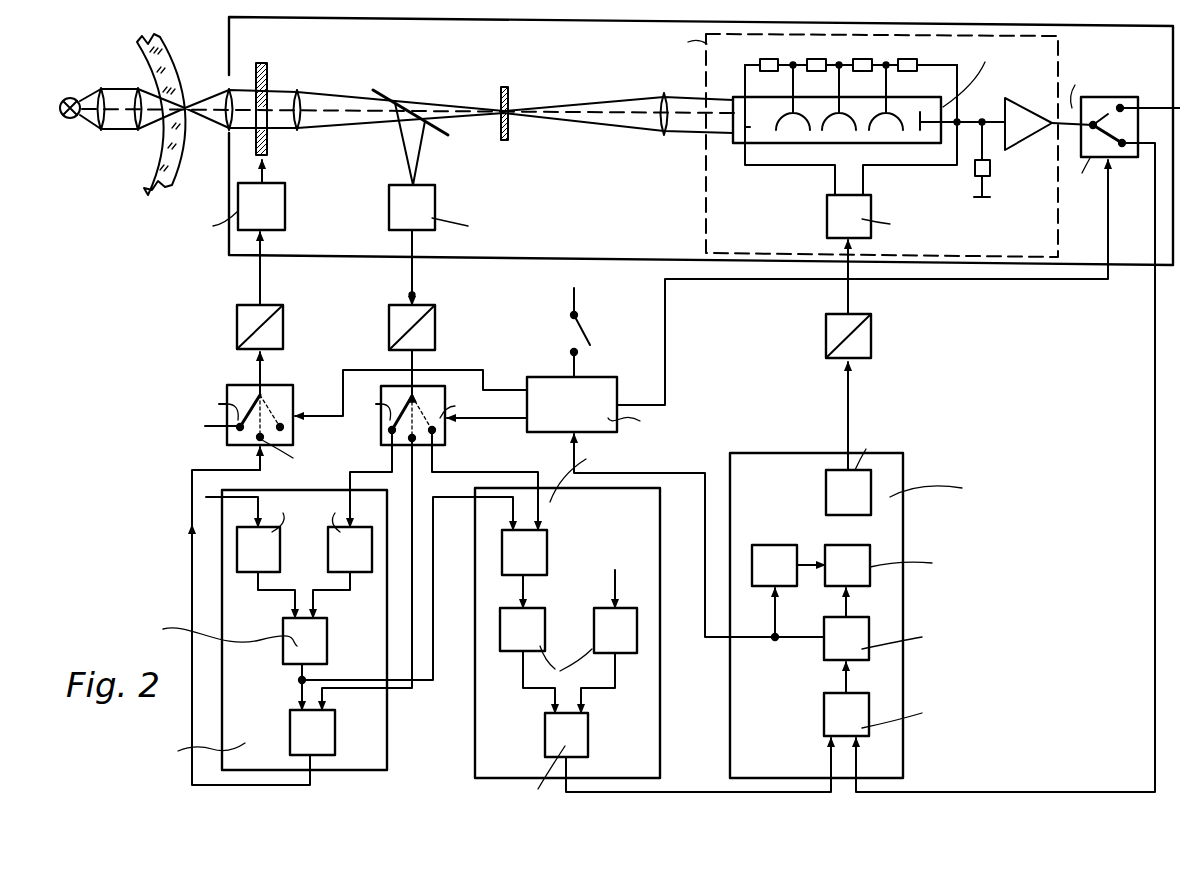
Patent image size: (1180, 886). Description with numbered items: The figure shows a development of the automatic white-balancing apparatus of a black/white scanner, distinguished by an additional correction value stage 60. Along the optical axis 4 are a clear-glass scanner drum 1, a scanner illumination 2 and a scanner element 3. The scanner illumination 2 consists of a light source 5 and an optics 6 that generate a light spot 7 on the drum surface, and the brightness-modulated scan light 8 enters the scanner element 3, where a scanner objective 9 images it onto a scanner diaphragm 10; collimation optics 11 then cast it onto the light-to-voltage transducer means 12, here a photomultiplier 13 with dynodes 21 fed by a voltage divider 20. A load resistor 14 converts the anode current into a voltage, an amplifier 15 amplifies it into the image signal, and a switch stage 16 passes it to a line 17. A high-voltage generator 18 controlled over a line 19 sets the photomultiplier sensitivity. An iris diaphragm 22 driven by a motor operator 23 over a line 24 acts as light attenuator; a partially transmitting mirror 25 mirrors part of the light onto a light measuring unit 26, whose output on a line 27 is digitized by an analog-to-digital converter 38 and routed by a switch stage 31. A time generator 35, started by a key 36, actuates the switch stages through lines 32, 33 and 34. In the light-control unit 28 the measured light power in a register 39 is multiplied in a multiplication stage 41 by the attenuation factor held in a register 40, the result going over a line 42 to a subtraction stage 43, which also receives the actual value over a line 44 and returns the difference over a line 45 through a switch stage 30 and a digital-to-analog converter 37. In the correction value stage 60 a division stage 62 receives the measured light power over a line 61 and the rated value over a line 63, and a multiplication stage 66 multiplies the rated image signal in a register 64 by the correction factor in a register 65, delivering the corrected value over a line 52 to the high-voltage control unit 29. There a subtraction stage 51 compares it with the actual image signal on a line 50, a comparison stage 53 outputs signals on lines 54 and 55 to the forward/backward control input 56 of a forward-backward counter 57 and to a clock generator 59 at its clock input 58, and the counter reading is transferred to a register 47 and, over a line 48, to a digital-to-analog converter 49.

The scanner drum 1 is at (174, 52).
The scanner illumination 2 is at (101, 163).
The scanner element 3 is at (229, 42).
The optical axis 4 is at (322, 116).
The light source 5 is at (73, 97).
The optics 6 is at (136, 86).
The light spot 7 is at (187, 97).
The scan light 8 is at (215, 119).
The scanner objective 9 is at (292, 88).
The scanner diaphragm 10 is at (500, 90).
The collimation optics 11 is at (657, 96).
The light-to-voltage transducer means 12 is at (708, 160).
The photomultiplier 13 is at (917, 108).
The load resistor 14 is at (990, 168).
The amplifier 15 is at (1022, 112).
The switch stage 16 is at (1107, 97).
The line 17 is at (1155, 106).
The high-voltage generator 18 is at (835, 219).
The line 19 is at (846, 300).
The voltage divider 20 is at (814, 61).
The dynodes 21 is at (838, 132).
The iris diaphragm 22 is at (270, 140).
The motor operator 23 is at (278, 205).
The line 24 is at (259, 294).
The partially transmitting mirror 25 is at (396, 90).
The light measuring unit 26 is at (432, 205).
The line 27 is at (410, 284).
The light-control unit 28 is at (370, 753).
The high-voltage control unit 29 is at (890, 497).
The switch stage 30 is at (232, 385).
The switch stage 31 is at (386, 428).
The line 32 is at (667, 362).
The line 33 is at (461, 370).
The line 34 is at (498, 421).
The time generator 35 is at (541, 388).
The key 36 is at (588, 333).
The digital-to-analog converter 37 is at (280, 323).
The analog-to-digital converter 38 is at (432, 326).
The register 39 is at (330, 562).
The register 40 is at (272, 555).
The multiplication stage 41 is at (320, 643).
The line 42 is at (300, 689).
The subtraction stage 43 is at (328, 738).
The line 44 is at (410, 593).
The line 45 is at (192, 511).
The register 47 is at (832, 488).
The line 48 is at (850, 416).
The digital-to-analog converter 49 is at (868, 329).
The line 50 is at (1153, 362).
The subtraction stage 51 is at (835, 716).
The line 52 is at (828, 765).
The comparison stage 53 is at (835, 646).
The line 54 is at (850, 607).
The line 55 is at (773, 632).
The forward/backward control input 56 is at (845, 590).
The forward-backward counter 57 is at (872, 559).
The clock input 58 is at (826, 565).
The clock generator 59 is at (758, 544).
The correction value stage 60 is at (650, 702).
The line 61 is at (490, 474).
The division stage 62 is at (540, 554).
The line 63 is at (433, 594).
The register 64 is at (600, 636).
The register 65 is at (515, 636).
The multiplication stage 66 is at (582, 743).